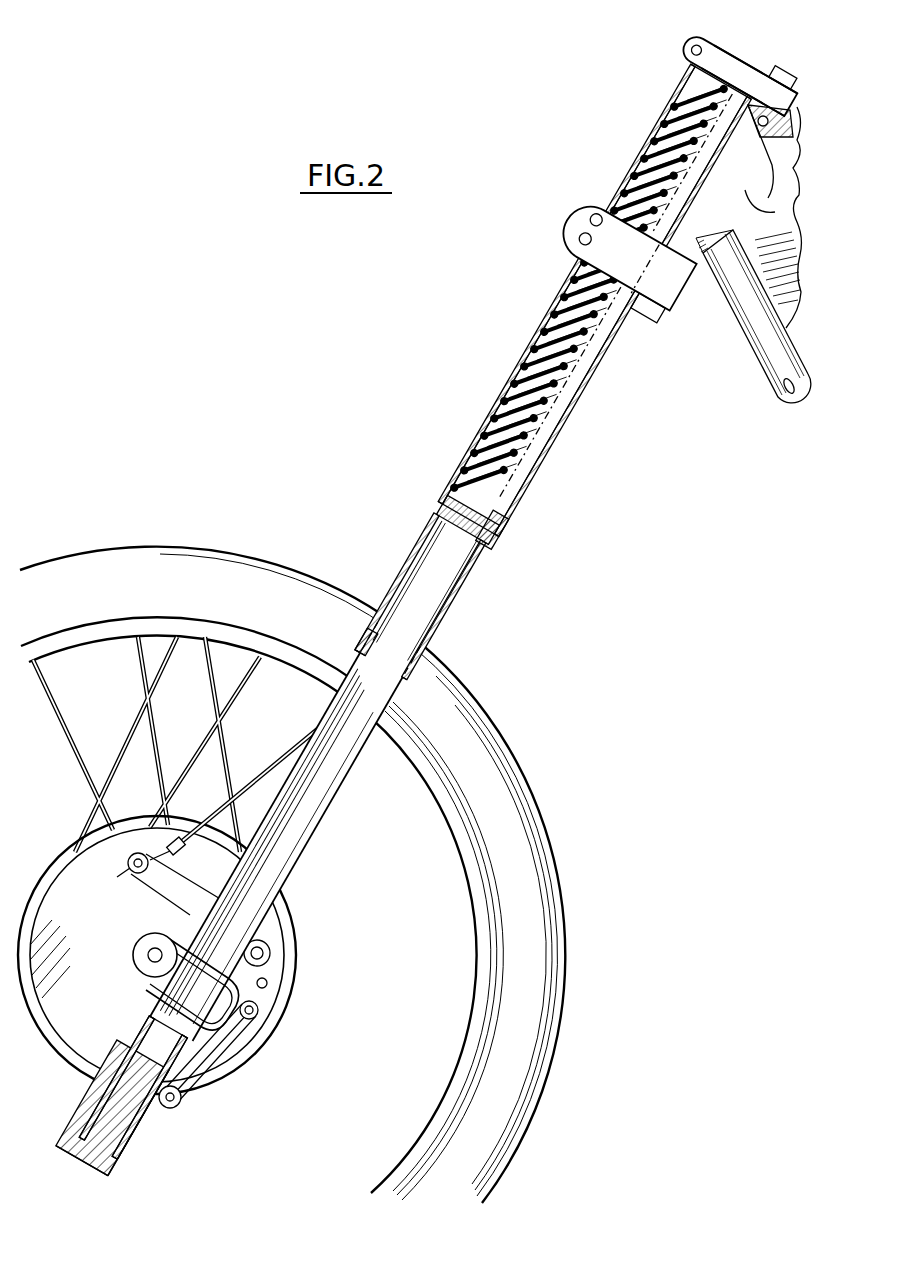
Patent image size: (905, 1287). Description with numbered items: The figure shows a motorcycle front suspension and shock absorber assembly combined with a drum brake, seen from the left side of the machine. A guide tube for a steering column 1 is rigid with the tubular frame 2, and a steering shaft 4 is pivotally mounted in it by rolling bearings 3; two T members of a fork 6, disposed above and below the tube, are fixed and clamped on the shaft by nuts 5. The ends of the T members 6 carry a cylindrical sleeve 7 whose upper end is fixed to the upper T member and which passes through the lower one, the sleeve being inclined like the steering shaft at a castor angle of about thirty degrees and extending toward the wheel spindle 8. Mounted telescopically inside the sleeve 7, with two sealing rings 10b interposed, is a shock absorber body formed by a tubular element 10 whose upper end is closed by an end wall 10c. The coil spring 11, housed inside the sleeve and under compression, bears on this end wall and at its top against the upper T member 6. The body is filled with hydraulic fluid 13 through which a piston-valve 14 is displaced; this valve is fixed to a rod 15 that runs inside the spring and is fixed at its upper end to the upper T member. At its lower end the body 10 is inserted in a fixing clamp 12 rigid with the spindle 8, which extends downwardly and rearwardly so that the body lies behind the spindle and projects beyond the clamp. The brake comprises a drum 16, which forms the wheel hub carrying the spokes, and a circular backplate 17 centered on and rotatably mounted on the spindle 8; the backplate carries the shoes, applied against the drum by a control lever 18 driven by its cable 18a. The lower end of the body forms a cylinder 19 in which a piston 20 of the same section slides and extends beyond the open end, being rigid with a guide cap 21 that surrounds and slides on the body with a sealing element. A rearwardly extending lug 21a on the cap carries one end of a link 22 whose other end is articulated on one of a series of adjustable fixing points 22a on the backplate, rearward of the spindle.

The guide tube for a steering column 1 is at (745, 206).
The tubular frame 2 is at (766, 370).
The rolling bearings 3 is at (757, 146).
The steering shaft 4 is at (784, 68).
The nuts 5 is at (773, 78).
The T members of a fork 6 is at (703, 63).
The cylindrical sleeve 7 is at (528, 360).
The wheel spindle 8 is at (150, 935).
The tubular element (shock absorber body) 10 is at (297, 824).
The sealing rings 10b is at (517, 528).
The end wall 10c is at (445, 497).
The coil spring 11 is at (555, 433).
The fixing clamp 12 is at (143, 967).
The hydraulic fluid 13 is at (408, 683).
The piston-valve 14 is at (470, 556).
The rod 15 is at (516, 398).
The drum 16 is at (53, 858).
The circular backplate 17 is at (95, 893).
The control lever 18 is at (183, 905).
The cable 18a is at (280, 758).
The cylinder 19 is at (140, 1125).
The piston 20 is at (102, 1120).
The guide cap 21 is at (127, 1140).
The lug 21a is at (185, 1100).
The link 22 is at (224, 1045).
The adjustable fixing points 22a is at (262, 1012).